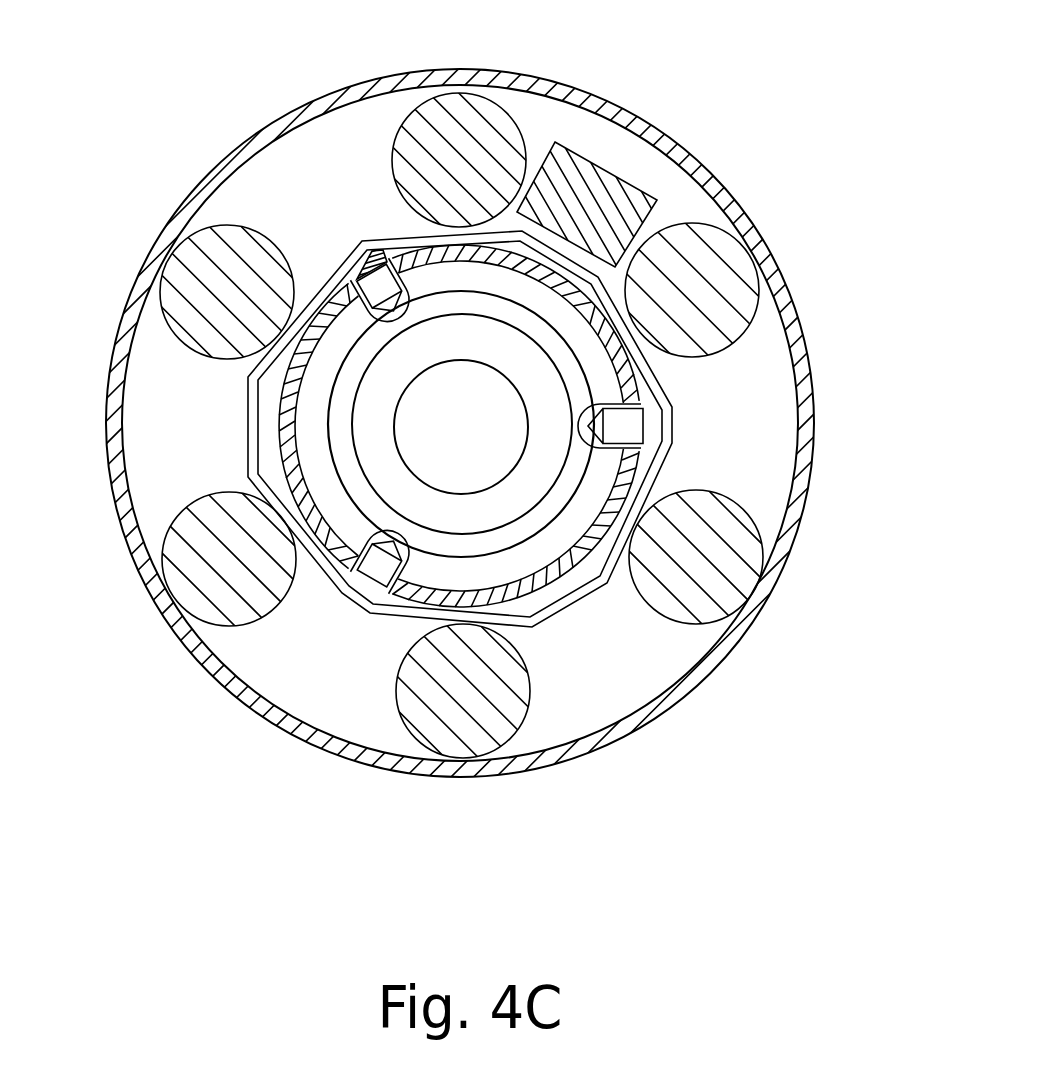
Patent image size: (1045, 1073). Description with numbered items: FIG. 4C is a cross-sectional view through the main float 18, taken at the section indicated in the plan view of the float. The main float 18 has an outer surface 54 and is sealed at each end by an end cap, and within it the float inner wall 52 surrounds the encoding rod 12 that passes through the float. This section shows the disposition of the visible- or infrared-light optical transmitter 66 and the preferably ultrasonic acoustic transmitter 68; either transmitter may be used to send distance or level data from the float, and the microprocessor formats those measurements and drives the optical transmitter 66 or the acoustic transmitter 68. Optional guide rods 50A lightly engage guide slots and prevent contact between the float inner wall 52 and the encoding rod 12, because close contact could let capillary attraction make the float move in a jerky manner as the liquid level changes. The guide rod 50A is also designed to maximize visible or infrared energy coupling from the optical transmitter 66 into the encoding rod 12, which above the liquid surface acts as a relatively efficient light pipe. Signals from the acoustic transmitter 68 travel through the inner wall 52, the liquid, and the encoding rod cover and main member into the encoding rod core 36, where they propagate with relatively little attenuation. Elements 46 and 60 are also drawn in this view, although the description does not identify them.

The encoding rod 12 is at (588, 400).
The main float 18 is at (710, 177).
The encoding rod core 36 is at (461, 424).
The rollers 46 is at (715, 577).
The guide rod 50A is at (378, 287).
The float inner wall 52 is at (634, 456).
The outer surface 54 is at (120, 400).
The key 60 is at (400, 613).
The optical transmitter 66 is at (348, 262).
The acoustic transmitter 68 is at (593, 198).